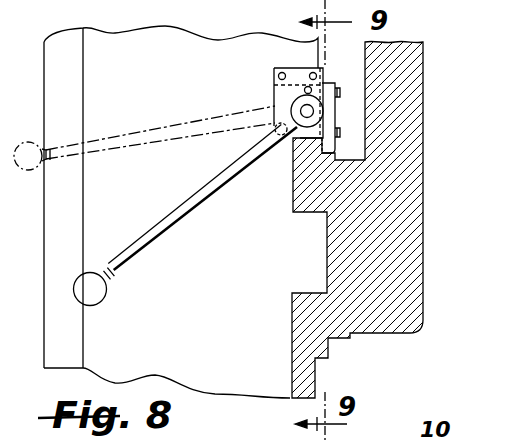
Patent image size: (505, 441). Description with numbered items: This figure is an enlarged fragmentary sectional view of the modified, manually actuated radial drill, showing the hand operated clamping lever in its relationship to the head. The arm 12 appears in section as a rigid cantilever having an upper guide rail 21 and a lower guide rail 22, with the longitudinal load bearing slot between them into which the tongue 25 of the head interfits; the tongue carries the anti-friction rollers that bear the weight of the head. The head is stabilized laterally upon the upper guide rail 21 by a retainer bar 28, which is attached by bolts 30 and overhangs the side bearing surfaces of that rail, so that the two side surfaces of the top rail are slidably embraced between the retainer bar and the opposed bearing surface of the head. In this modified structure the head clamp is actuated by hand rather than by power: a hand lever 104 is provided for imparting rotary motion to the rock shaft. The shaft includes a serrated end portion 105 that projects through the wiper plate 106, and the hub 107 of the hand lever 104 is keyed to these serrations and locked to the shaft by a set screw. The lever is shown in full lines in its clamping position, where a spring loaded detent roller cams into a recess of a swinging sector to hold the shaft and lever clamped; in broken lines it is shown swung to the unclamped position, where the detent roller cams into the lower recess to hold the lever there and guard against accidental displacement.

The arm 12 is at (424, 60).
The upper guide rail 21 is at (308, 176).
The lower guide rail 22 is at (302, 330).
The tongue 25 is at (323, 243).
The retainer bar 28 is at (328, 126).
The bolts 30 is at (338, 90).
The hand lever 104 is at (145, 124).
The serrated end portion 105 is at (306, 86).
The wiper plate 106 is at (280, 91).
The hub 107 is at (300, 106).